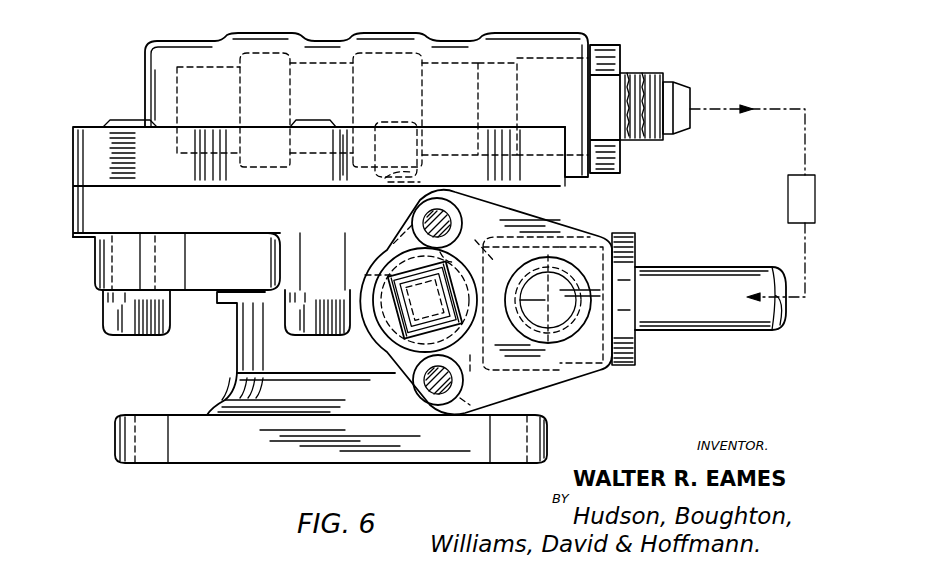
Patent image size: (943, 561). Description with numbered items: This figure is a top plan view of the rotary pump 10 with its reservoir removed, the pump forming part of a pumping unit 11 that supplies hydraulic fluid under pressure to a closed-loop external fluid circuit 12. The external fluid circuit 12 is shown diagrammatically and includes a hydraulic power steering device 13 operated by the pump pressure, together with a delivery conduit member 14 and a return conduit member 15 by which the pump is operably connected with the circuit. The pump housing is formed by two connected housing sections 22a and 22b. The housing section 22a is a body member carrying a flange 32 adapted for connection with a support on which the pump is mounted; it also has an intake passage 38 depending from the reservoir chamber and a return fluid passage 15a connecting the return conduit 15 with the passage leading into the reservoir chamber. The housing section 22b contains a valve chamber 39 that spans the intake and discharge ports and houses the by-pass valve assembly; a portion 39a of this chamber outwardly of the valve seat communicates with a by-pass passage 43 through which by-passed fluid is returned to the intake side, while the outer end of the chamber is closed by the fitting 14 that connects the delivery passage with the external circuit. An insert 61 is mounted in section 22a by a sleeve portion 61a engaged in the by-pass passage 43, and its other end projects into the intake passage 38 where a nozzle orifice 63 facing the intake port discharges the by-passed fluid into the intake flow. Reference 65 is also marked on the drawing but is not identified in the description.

The rotary pump 10 is at (237, 352).
The pumping unit 11 is at (583, 221).
The external fluid circuit 12 is at (772, 108).
The hydraulic power steering device 13 is at (788, 196).
The delivery conduit member 14 is at (675, 84).
The return conduit member 15 is at (693, 272).
The return fluid passage 15a is at (540, 317).
The housing section 22a is at (93, 270).
The housing section 22b is at (440, 126).
The flange 32 is at (205, 452).
The intake passage 38 is at (457, 288).
The valve chamber 39 is at (273, 53).
The portion of valve chamber 39a is at (390, 57).
The by-pass passage 43 is at (425, 177).
The insert 61 is at (436, 230).
The sleeve portion 61a is at (365, 266).
The nozzle orifice 63 is at (447, 299).
The housing 65 is at (332, 88).